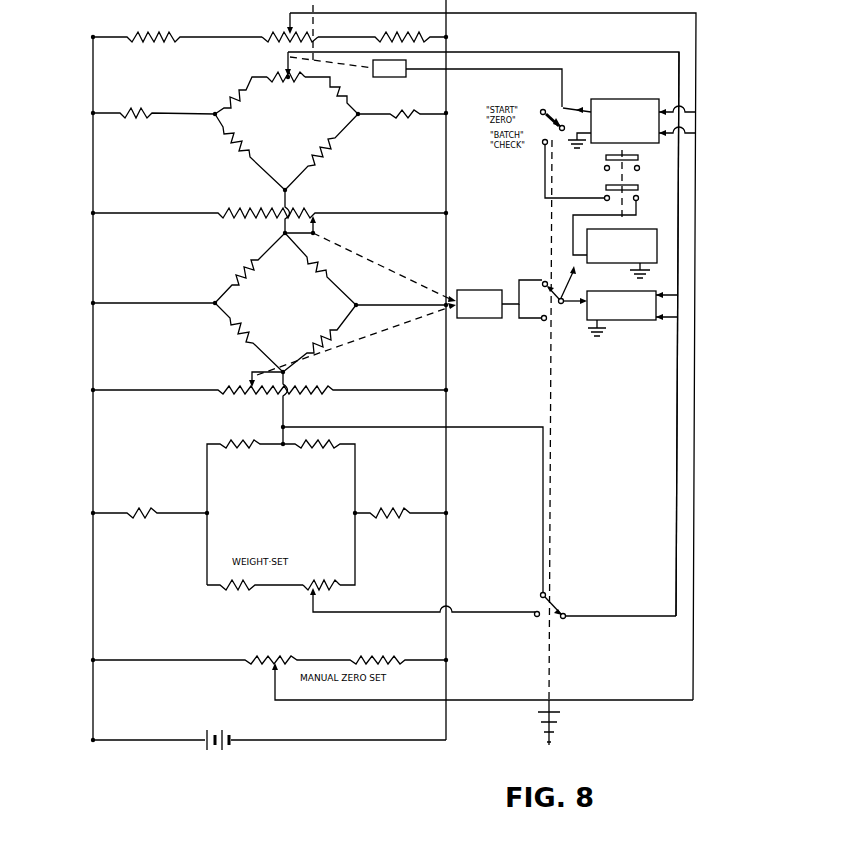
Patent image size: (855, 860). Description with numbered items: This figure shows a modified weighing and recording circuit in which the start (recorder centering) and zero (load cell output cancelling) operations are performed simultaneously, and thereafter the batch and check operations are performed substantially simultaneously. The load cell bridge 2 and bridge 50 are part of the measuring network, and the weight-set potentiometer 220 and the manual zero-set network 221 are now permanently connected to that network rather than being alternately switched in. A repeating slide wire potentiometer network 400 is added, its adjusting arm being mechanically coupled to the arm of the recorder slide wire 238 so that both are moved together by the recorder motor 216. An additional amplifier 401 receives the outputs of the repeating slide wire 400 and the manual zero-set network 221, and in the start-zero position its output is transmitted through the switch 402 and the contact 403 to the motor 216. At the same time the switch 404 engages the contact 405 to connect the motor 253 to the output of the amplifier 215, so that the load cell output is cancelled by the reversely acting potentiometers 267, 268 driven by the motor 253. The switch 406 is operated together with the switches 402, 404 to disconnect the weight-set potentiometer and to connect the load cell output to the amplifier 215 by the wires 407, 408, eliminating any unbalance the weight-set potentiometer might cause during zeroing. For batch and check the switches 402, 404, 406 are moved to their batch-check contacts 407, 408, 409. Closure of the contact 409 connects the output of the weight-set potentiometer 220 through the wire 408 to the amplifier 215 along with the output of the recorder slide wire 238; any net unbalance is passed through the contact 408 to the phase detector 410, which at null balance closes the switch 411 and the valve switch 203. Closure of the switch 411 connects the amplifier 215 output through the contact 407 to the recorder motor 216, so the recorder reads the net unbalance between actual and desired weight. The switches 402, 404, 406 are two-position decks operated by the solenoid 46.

The repeating slide wire potentiometer network 400 is at (288, 33).
The recorder slide wire 238 is at (473, 334).
The bridge circuit 50 is at (286, 133).
The reversely acting potentiometer 267 is at (269, 213).
The bridge circuit 2 is at (340, 322).
The reversely acting potentiometer 268 is at (269, 382).
The recorder motor 216 is at (426, 82).
The motor 253 is at (479, 304).
The weight-set potentiometer 220 is at (419, 589).
The manual zero-set network 221 is at (393, 669).
The amplifier 401 is at (629, 123).
The switch 402 is at (563, 108).
The contact 403 is at (549, 109).
The batch-check contact 407 is at (543, 148).
The valve switch 203 is at (604, 168).
The switch 411 is at (638, 190).
The phase detector 410 is at (641, 229).
The contact 405 is at (543, 281).
The switch 404 is at (556, 297).
The batch-check contact 408 is at (542, 321).
The amplifier 215 is at (657, 310).
The switch 406 is at (553, 604).
The batch-check contact 409 is at (536, 618).
The solenoid 46 is at (557, 733).